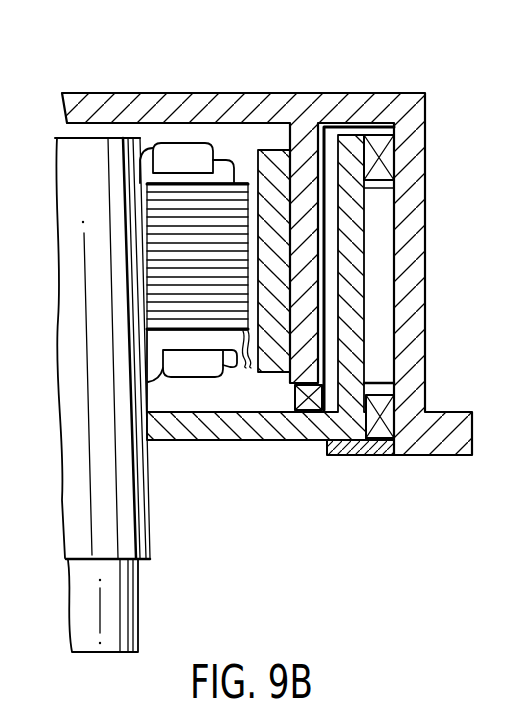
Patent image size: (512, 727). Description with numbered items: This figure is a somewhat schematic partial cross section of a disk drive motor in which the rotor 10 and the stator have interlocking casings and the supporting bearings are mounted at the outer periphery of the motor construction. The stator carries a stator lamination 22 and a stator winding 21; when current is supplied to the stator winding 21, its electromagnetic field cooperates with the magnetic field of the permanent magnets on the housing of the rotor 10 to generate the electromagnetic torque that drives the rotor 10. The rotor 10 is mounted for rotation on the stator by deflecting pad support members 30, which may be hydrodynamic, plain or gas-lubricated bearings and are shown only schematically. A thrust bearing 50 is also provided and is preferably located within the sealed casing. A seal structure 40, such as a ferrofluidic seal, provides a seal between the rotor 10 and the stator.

The rotor 10 is at (183, 102).
The stator winding 21 is at (199, 371).
The stator lamination 22 is at (213, 152).
The deflecting pad support members 30 is at (384, 157).
The seal structure 40 is at (388, 457).
The thrust bearing 50 is at (297, 403).